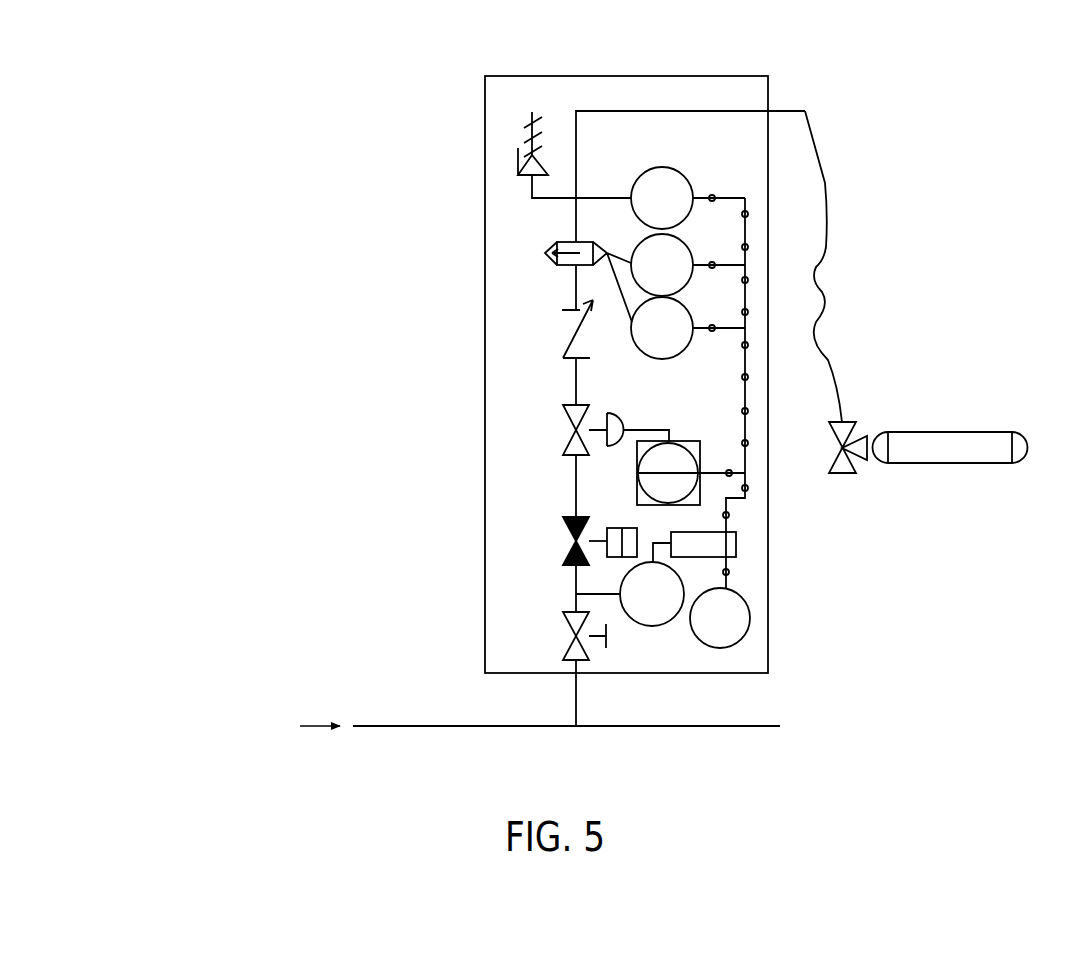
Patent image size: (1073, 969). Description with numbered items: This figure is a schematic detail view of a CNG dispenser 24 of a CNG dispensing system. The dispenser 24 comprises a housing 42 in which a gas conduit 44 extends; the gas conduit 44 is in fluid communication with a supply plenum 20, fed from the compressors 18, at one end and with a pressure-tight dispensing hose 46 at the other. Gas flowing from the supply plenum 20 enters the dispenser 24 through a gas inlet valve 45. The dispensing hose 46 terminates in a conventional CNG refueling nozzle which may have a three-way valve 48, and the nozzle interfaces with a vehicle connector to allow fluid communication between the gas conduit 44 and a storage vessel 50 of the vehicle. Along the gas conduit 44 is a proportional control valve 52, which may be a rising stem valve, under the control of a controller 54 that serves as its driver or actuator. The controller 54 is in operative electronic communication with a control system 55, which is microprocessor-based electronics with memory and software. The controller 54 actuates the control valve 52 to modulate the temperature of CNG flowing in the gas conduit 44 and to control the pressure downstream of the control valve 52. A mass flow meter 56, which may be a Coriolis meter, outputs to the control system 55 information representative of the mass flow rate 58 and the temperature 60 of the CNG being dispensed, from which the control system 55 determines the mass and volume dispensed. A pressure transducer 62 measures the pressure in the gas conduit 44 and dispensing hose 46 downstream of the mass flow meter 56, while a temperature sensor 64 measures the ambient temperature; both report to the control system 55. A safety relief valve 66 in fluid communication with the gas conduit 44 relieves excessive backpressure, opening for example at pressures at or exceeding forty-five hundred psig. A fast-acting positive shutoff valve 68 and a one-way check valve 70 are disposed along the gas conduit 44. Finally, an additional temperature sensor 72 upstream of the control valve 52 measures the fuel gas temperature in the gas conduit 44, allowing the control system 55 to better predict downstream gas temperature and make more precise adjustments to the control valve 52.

The compressors 18 is at (245, 748).
The supply plenum 20 is at (460, 730).
The CNG dispenser 24 is at (408, 101).
The housing 42 is at (512, 75).
The gas conduit 44 is at (690, 110).
The gas inlet valve 45 is at (576, 636).
The dispensing hose 46 is at (823, 186).
The three-way valve 48 is at (876, 409).
The storage vessel 50 is at (960, 432).
The proportional control valve 52 is at (576, 430).
The controller 54 is at (683, 440).
The control system 55 is at (736, 543).
The mass flow meter 56 is at (545, 255).
The mass flow rate 58 is at (682, 240).
The temperature 60 is at (682, 305).
The pressure transducer 62 is at (682, 172).
The temperature sensor 64 is at (750, 620).
The safety relief valve 66 is at (518, 157).
The positive shutoff valve 68 is at (576, 541).
The one-way check valve 70 is at (576, 327).
The additional temperature sensor 72 is at (651, 627).